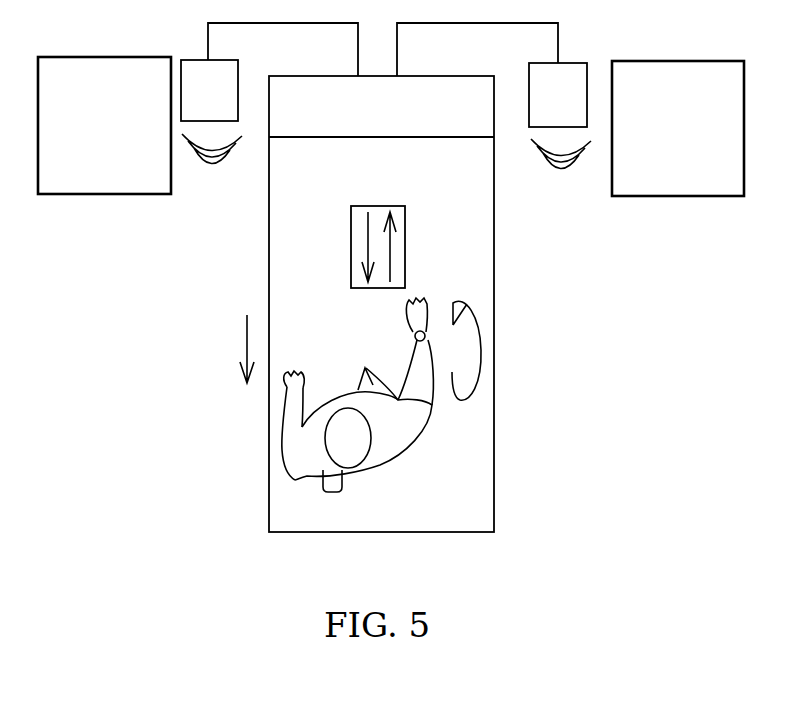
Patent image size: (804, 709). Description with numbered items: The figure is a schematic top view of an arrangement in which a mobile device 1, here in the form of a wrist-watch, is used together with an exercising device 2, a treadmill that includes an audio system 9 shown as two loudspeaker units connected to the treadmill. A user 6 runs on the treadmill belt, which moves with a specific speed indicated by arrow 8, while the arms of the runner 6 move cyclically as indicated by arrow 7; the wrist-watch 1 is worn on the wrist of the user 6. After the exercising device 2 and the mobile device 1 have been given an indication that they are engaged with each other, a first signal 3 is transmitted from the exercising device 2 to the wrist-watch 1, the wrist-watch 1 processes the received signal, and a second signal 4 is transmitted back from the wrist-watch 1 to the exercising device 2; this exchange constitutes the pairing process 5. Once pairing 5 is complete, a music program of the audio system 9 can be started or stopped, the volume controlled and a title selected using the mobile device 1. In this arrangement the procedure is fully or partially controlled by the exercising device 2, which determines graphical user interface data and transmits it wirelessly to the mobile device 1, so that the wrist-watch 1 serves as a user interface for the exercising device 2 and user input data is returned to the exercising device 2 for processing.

The mobile device 1 is at (417, 337).
The exercising device 2 is at (468, 455).
The first signal 3 is at (367, 242).
The second signal 4 is at (390, 258).
The pairing process 5 is at (407, 252).
The user 6 is at (305, 453).
The arrow indicating arm movement 7 is at (482, 370).
The arrow indicating belt speed 8 is at (245, 347).
The audio system 9 is at (391, 109).